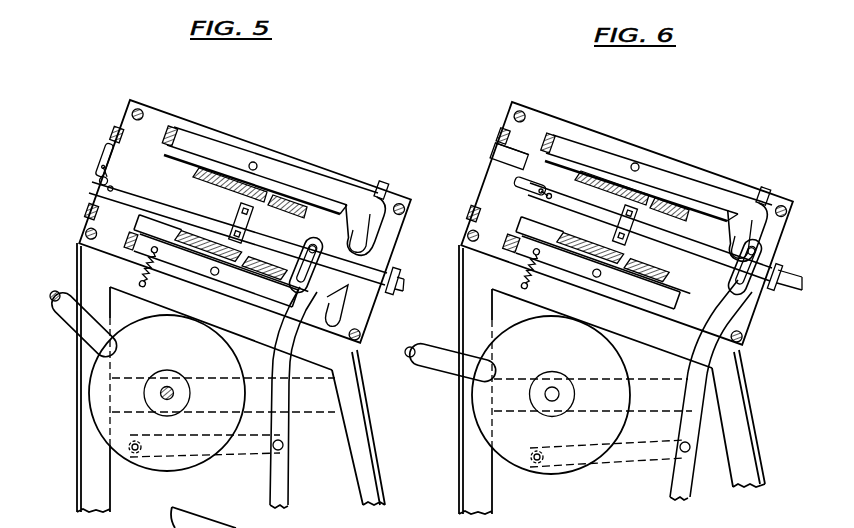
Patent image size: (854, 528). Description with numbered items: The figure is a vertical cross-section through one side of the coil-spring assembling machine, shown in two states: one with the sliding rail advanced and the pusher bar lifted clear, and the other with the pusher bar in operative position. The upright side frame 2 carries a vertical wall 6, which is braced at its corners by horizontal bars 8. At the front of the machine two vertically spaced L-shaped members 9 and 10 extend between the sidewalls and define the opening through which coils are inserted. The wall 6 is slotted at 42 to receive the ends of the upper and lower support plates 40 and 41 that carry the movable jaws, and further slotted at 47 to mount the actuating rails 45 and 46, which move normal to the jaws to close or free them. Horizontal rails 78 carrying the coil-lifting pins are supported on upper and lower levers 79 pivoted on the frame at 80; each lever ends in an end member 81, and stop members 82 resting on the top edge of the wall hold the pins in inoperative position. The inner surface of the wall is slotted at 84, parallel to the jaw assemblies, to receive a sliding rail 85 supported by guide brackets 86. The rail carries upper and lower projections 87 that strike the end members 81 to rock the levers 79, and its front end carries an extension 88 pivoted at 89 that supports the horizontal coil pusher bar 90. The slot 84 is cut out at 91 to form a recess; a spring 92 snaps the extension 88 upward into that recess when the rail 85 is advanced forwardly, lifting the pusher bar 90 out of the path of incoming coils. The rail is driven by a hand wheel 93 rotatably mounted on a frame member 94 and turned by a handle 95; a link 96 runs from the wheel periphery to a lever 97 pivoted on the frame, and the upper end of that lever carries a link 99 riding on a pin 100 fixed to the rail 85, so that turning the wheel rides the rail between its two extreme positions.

In FIG. 5, the side frame 2 is at (77, 482).
In FIG. 6, the side frame 2 is at (466, 482).
In FIG. 5, the vertical wall 6 is at (152, 110).
In FIG. 6, the vertical wall 6 is at (606, 139).
In FIG. 5, the horizontal bar 8 is at (133, 101).
In FIG. 6, the horizontal bar 8 is at (520, 110).
In FIG. 5, the L-shaped member 9 is at (116, 135).
In FIG. 6, the L-shaped member 9 is at (502, 136).
In FIG. 5, the L-shaped member 10 is at (87, 214).
In FIG. 6, the L-shaped member 10 is at (477, 214).
In FIG. 5, the upper support plate 40 is at (232, 178).
In FIG. 6, the upper support plate 40 is at (660, 192).
In FIG. 5, the lower support plate 41 is at (145, 215).
In FIG. 6, the lower support plate 41 is at (580, 284).
In FIG. 5, the slot 42 is at (217, 150).
In FIG. 6, the slot 42 is at (566, 163).
In FIG. 5, the actuating rail 45 is at (323, 205).
In FIG. 6, the actuating rail 45 is at (668, 192).
In FIG. 5, the actuating rail 46 is at (260, 272).
In FIG. 6, the actuating rail 46 is at (636, 292).
In FIG. 5, the slot 47 is at (216, 285).
In FIG. 6, the slot 47 is at (592, 287).
In FIG. 5, the horizontal rail 78 is at (171, 127).
In FIG. 6, the horizontal rail 78 is at (552, 134).
In FIG. 5, the lever 79 is at (220, 153).
In FIG. 6, the lever 79 is at (674, 182).
In FIG. 5, the pivot 80 is at (254, 162).
In FIG. 6, the pivot 80 is at (635, 163).
In FIG. 5, the end member 81 is at (369, 237).
In FIG. 6, the end member 81 is at (766, 244).
In FIG. 5, the stop member 82 is at (380, 190).
In FIG. 6, the stop member 82 is at (760, 193).
In FIG. 6, the slot 84 is at (498, 176).
In FIG. 5, the sliding rail 85 is at (295, 200).
In FIG. 6, the sliding rail 85 is at (698, 258).
In FIG. 5, the guide bracket 86 is at (262, 225).
In FIG. 6, the guide bracket 86 is at (730, 284).
In FIG. 5, the projection 87 is at (350, 196).
In FIG. 6, the projection 87 is at (752, 310).
In FIG. 5, the extension 88 is at (100, 171).
In FIG. 6, the extension 88 is at (532, 195).
In FIG. 5, the pivot 89 is at (104, 183).
In FIG. 5, the coil pusher bar 90 is at (101, 154).
In FIG. 6, the coil pusher bar 90 is at (514, 188).
In FIG. 6, the cut-out recess 91 is at (496, 143).
In FIG. 5, the spring 92 is at (110, 189).
In FIG. 6, the spring 92 is at (541, 186).
In FIG. 5, the hand wheel 93 is at (100, 423).
In FIG. 6, the hand wheel 93 is at (500, 445).
In FIG. 5, the frame member 94 is at (302, 406).
In FIG. 6, the frame member 94 is at (640, 399).
In FIG. 5, the handle 95 is at (61, 311).
In FIG. 6, the handle 95 is at (432, 360).
In FIG. 5, the link 96 is at (236, 456).
In FIG. 6, the link 96 is at (624, 456).
In FIG. 5, the lever 97 is at (294, 496).
In FIG. 6, the lever 97 is at (694, 495).
In FIG. 5, the link 99 is at (275, 301).
In FIG. 6, the link 99 is at (724, 290).
In FIG. 5, the pin 100 is at (320, 252).
In FIG. 6, the pin 100 is at (735, 279).